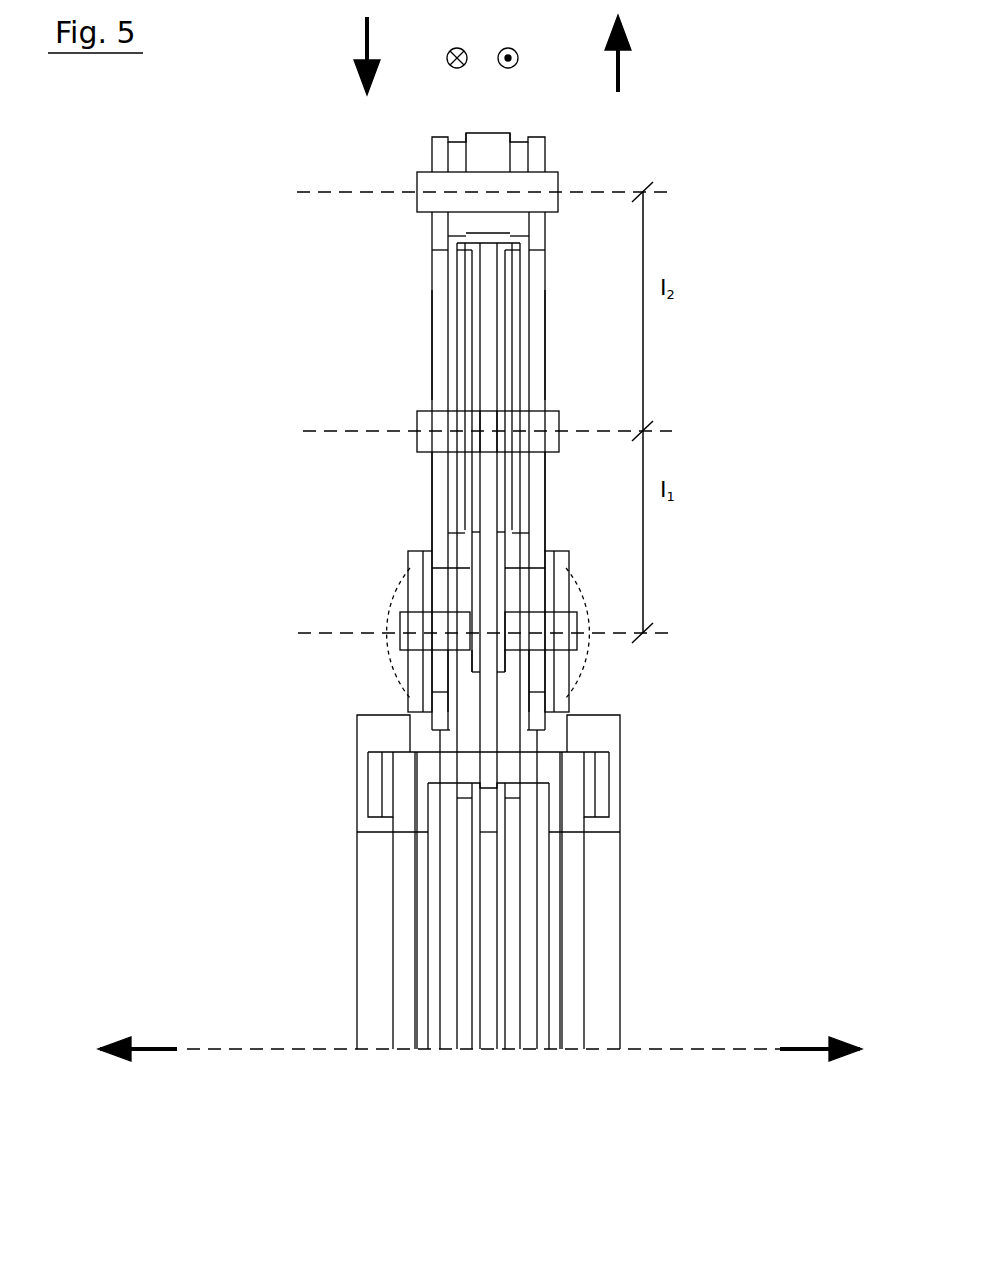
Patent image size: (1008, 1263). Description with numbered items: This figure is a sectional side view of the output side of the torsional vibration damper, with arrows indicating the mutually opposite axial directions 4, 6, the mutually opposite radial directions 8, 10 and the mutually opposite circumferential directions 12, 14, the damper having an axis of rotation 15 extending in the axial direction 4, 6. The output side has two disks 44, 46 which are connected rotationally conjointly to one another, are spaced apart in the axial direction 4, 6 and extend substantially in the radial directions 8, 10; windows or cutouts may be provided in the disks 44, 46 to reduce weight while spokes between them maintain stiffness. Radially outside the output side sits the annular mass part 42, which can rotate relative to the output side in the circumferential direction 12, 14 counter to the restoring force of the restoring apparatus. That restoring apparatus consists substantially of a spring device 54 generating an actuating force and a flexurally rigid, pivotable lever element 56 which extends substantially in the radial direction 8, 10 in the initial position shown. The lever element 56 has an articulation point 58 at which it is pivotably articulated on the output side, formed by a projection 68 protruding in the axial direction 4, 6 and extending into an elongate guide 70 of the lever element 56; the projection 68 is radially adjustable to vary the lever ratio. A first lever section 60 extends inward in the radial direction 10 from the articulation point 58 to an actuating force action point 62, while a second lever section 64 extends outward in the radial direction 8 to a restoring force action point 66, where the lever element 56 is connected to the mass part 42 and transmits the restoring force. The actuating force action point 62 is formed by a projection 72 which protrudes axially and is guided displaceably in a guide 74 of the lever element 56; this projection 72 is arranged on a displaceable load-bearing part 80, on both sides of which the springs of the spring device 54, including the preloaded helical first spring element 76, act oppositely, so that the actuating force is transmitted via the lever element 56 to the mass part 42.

The axial direction 4 is at (815, 1045).
The axial direction 6 is at (148, 1048).
The radial direction 8 is at (623, 70).
The radial direction 10 is at (365, 43).
The circumferential direction 12 is at (522, 50).
The circumferential direction 14 is at (447, 53).
The axis of rotation 15 is at (295, 1050).
The mass part 42 is at (493, 158).
The disk 44 is at (508, 300).
The disk 46 is at (465, 312).
The spring device 54 is at (372, 656).
The lever element 56 is at (418, 317).
The articulation point 58 is at (490, 431).
The first lever section 60 is at (432, 490).
The actuating force action point 62 is at (485, 633).
The second lever section 64 is at (432, 277).
The restoring force action point 66 is at (490, 192).
The projection 68 is at (406, 409).
The elongate guide 70 is at (438, 507).
The projection 72 is at (390, 622).
The guide 74 is at (443, 665).
The first spring element 76 is at (398, 605).
The load-bearing part 80 is at (415, 575).